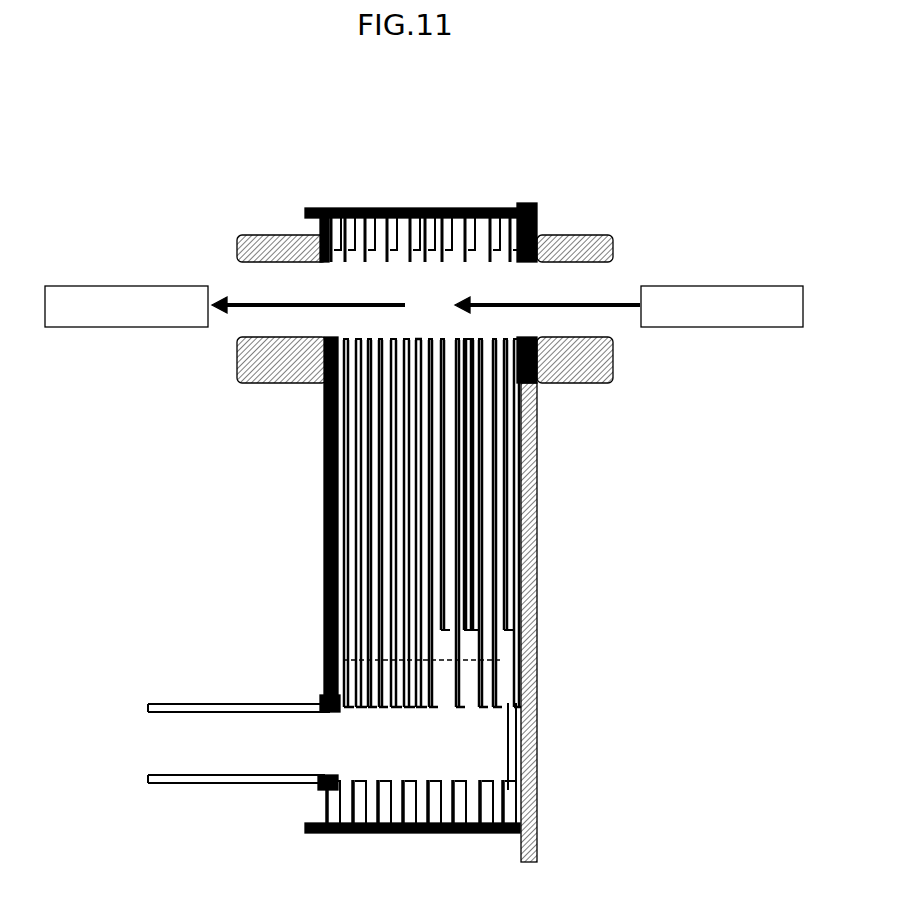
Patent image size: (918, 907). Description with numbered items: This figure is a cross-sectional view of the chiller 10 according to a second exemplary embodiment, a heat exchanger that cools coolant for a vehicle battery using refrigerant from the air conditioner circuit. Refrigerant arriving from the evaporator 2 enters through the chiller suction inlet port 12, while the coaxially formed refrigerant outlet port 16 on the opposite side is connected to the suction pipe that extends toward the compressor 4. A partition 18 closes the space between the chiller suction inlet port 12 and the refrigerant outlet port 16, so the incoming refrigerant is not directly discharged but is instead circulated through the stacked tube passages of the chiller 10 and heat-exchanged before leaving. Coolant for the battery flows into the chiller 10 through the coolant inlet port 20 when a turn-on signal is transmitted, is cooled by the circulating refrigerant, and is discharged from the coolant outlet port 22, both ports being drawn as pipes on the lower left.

The evaporator 2 is at (688, 286).
The compressor 4 is at (160, 285).
The chiller 10 is at (540, 520).
The chiller suction inlet port 12 is at (573, 278).
The refrigerant outlet port 16 is at (240, 282).
The partition 18 is at (420, 305).
The coolant inlet port 20 is at (178, 742).
The coolant outlet port 22 is at (243, 782).